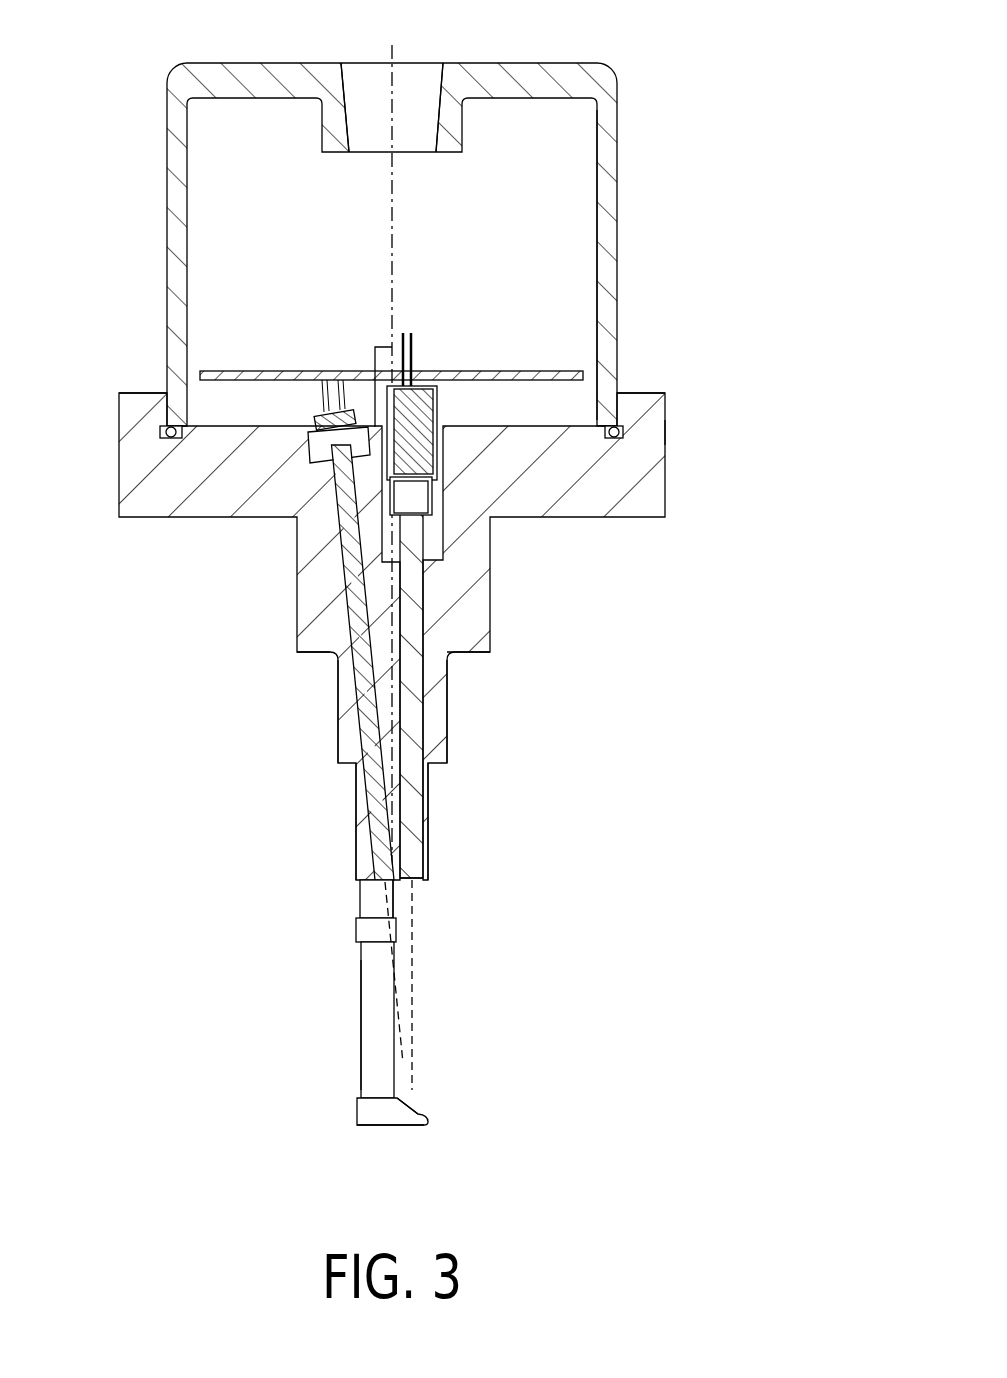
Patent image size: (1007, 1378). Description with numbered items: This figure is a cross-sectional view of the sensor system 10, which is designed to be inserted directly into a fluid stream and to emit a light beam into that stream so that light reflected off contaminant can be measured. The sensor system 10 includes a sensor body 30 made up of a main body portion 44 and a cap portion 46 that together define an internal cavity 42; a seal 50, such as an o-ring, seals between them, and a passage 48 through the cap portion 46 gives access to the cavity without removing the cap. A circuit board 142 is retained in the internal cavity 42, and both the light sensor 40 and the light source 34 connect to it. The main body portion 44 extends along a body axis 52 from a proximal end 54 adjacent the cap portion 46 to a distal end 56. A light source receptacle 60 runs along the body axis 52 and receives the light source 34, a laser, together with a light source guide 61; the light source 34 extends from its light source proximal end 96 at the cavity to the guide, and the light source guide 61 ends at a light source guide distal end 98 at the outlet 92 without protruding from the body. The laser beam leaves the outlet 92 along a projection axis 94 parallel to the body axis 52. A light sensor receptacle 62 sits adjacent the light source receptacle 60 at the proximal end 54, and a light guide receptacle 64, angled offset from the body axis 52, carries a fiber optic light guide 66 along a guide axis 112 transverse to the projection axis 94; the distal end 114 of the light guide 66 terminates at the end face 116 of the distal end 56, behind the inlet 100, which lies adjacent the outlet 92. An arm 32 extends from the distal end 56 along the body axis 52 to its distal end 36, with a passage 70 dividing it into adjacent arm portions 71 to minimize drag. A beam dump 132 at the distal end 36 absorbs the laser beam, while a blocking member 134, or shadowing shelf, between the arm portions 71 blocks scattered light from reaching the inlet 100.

The sensor system 10 is at (684, 106).
The sensor body 30 is at (745, 414).
The arm 32 is at (357, 958).
The light source 34 is at (437, 400).
The distal end of the arm 36 is at (341, 1146).
The light sensor 40 is at (313, 421).
The internal cavity 42 is at (582, 208).
The main body portion 44 is at (665, 511).
The cap portion 46 is at (618, 299).
The passage 48 is at (355, 72).
The seal 50 is at (158, 431).
The body axis 52 is at (397, 60).
The proximal end 54 is at (692, 438).
The distal end 56 is at (458, 750).
The light source receptacle 60 is at (432, 586).
The light source guide 61 is at (423, 710).
The light sensor receptacle 62 is at (297, 455).
The light guide receptacle 64 is at (353, 740).
The light guide 66 is at (372, 810).
The passage 70 is at (377, 992).
The arm portions 71 is at (375, 1078).
The outlet 92 is at (406, 888).
The projection axis 94 is at (412, 1053).
The light source proximal end 96 is at (449, 418).
The light source guide distal end 98 is at (448, 856).
The inlet 100 is at (365, 884).
The guide axis 112 is at (402, 1063).
The distal end of the light guide 114 is at (367, 852).
The end face 116 is at (405, 893).
The beam dump 132 is at (420, 1125).
The blocking member 134 is at (354, 937).
The circuit board 142 is at (248, 370).